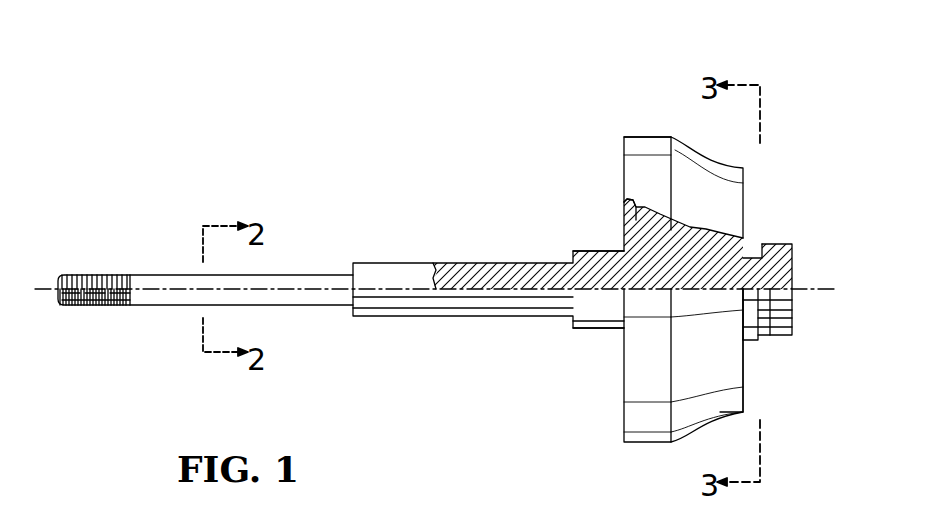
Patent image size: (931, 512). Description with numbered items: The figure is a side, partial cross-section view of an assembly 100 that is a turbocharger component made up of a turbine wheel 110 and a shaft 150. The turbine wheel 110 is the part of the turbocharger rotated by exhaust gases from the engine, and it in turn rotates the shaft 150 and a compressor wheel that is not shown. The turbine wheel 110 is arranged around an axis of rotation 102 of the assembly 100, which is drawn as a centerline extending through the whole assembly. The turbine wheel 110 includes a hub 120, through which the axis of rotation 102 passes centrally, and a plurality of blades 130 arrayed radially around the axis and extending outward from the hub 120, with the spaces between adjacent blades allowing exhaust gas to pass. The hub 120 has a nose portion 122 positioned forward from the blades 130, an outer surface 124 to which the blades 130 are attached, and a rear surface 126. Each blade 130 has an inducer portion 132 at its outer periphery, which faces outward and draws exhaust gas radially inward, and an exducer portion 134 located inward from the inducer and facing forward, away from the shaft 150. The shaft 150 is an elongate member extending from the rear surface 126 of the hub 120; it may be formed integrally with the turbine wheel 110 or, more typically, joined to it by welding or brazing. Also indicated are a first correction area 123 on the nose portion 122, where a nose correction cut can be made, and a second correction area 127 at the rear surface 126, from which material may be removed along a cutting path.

The assembly 100 is at (170, 111).
The axis of rotation 102 is at (46, 285).
The shaft 150 is at (120, 273).
The turbine wheel 110 is at (795, 315).
The hub 120 is at (690, 228).
The nose portion 122 is at (785, 244).
The first correction area 123 is at (751, 245).
The outer surface 124 is at (713, 227).
The rear surface 126 is at (624, 240).
The second correction area 127 is at (621, 216).
The blades 130 is at (624, 163).
The inducer portion 132 is at (645, 137).
The exducer portion 134 is at (745, 363).